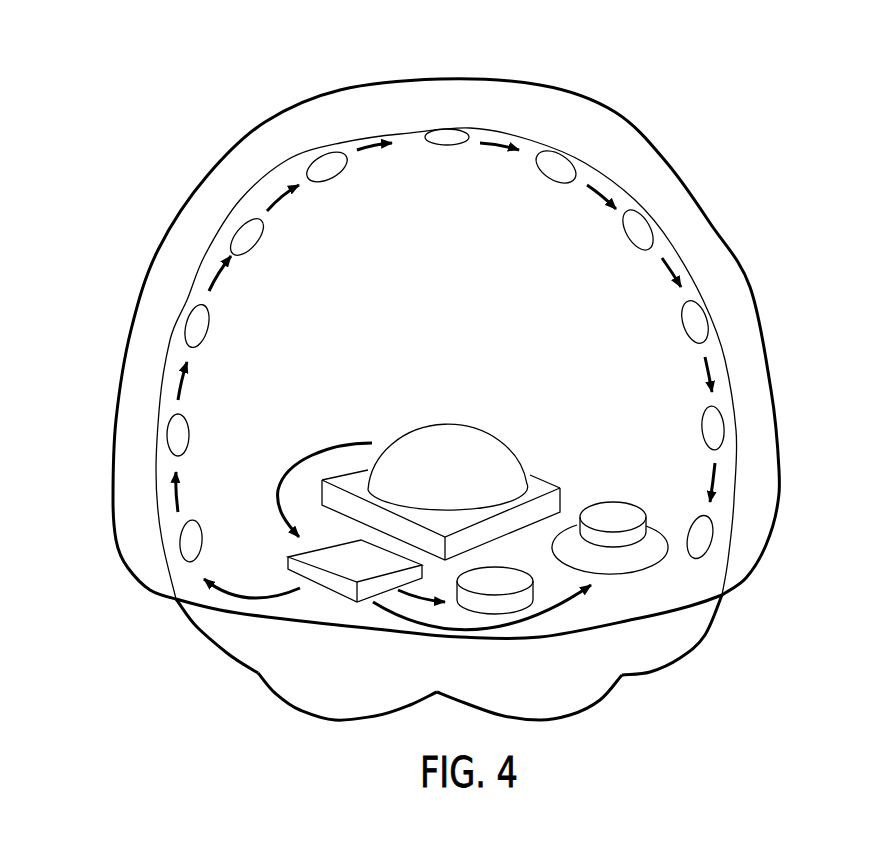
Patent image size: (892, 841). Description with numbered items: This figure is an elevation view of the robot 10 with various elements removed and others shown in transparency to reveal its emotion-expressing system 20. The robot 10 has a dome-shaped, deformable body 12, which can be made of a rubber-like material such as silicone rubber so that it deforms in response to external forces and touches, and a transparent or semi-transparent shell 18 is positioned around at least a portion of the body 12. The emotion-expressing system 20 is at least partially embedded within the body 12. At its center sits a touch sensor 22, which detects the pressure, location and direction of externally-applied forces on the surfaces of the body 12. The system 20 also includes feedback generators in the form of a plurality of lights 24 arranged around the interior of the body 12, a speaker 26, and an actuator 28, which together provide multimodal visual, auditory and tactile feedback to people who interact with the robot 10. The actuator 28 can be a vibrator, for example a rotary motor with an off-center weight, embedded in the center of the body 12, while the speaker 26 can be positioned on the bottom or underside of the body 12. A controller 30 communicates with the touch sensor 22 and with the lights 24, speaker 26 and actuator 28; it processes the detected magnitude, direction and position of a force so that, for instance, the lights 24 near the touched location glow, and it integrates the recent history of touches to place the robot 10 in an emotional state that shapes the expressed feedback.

The robot 10 is at (706, 86).
The body 12 is at (687, 635).
The shell 18 is at (125, 493).
The emotion-expressing system 20 is at (719, 348).
The touch sensor 22 is at (460, 437).
The lights 24 is at (187, 545).
The speaker 26 is at (613, 510).
The actuator 28 is at (508, 582).
The controller 30 is at (343, 568).